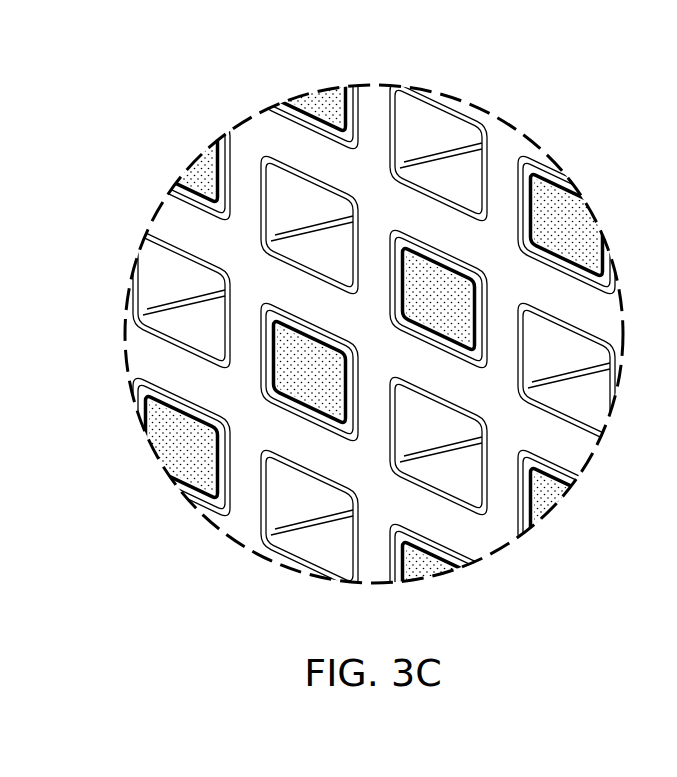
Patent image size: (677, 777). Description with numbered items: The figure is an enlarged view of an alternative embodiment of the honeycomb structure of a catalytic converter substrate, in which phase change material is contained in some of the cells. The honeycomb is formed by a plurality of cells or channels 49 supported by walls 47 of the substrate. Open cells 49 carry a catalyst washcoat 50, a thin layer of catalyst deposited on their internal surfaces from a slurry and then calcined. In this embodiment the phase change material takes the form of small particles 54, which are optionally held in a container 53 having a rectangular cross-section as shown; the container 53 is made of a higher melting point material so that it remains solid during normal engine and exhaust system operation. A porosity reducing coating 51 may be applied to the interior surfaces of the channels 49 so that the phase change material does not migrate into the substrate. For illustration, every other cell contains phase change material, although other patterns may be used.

The walls 47 is at (503, 157).
The cells or channels 49 is at (432, 130).
The catalyst washcoat 50 is at (393, 98).
The porosity reducing coating 51 is at (541, 163).
The container 53 is at (606, 250).
The particles 54 is at (582, 220).